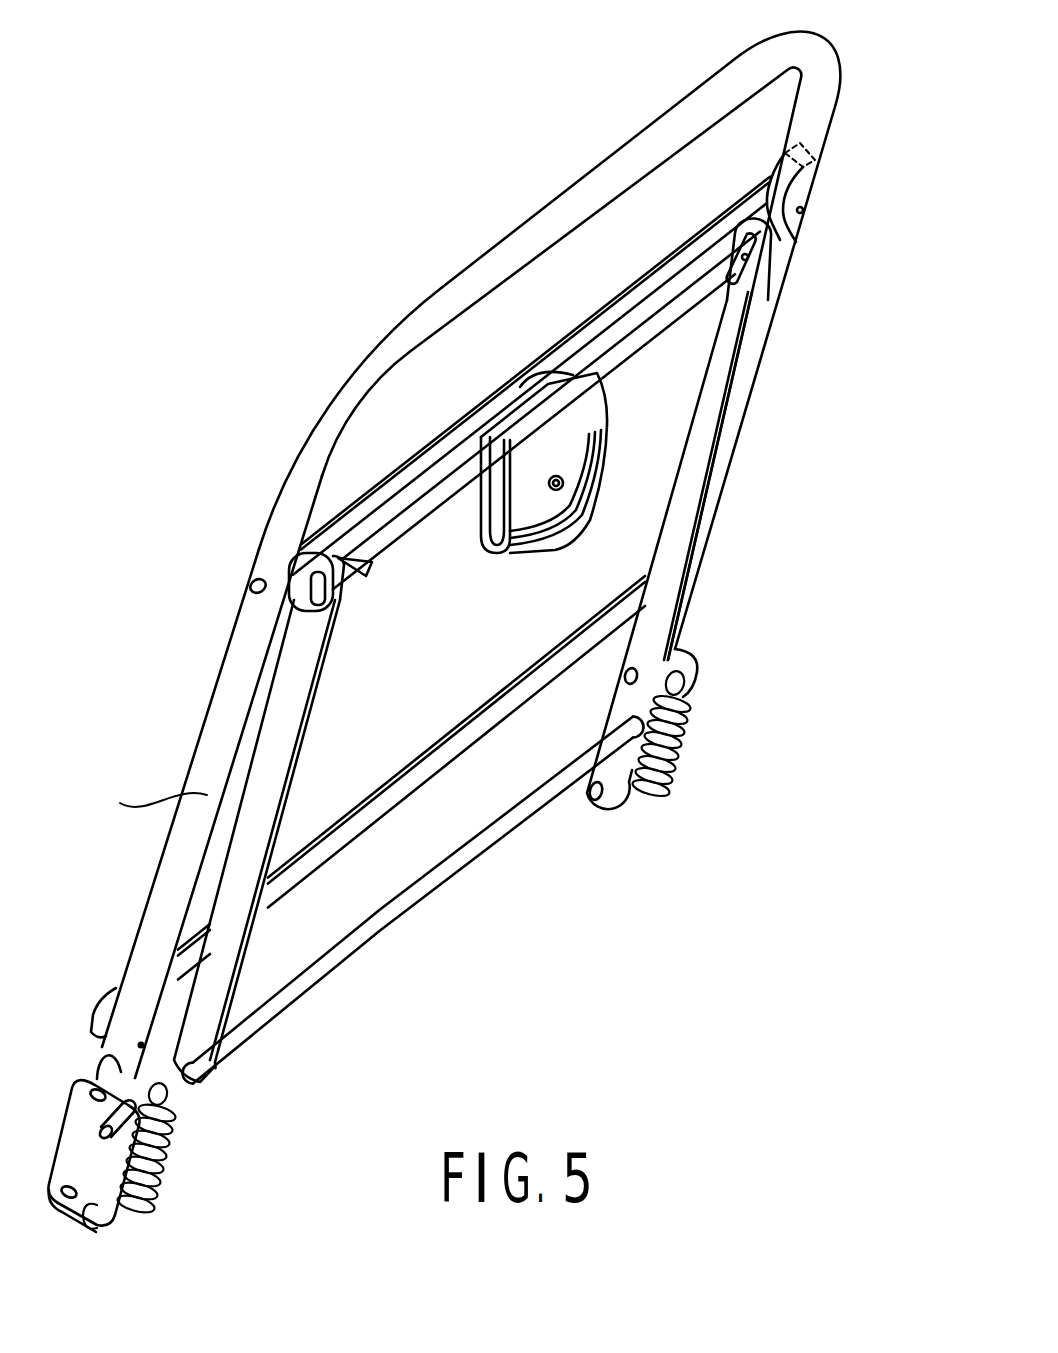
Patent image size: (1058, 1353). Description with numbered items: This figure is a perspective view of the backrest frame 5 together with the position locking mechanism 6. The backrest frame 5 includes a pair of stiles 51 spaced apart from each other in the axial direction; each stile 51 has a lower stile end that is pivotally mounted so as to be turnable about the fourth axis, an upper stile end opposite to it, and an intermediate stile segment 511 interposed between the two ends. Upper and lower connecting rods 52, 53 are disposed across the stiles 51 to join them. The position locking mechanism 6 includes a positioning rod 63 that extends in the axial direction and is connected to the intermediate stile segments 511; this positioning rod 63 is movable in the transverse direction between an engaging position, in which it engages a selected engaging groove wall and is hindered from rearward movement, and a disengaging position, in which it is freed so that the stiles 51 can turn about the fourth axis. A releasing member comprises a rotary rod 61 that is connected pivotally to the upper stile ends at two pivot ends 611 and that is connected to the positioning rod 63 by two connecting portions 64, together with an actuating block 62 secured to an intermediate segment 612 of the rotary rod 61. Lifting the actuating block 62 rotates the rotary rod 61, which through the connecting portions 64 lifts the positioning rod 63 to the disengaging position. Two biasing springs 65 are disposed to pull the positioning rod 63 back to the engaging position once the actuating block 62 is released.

The backrest frame 5 is at (866, 58).
The stile 51 is at (818, 162).
The intermediate stile segment 511 is at (743, 377).
The upper connecting rod 52 is at (570, 346).
The lower connecting rod 53 is at (432, 750).
The position locking mechanism 6 is at (447, 910).
The rotary rod 61 is at (640, 340).
The pivot end 611 is at (818, 143).
The intermediate segment 612 is at (418, 513).
The actuating block 62 is at (541, 541).
The positioning rod 63 is at (508, 820).
The connecting portion 64 is at (677, 546).
The biasing spring 65 is at (673, 800).